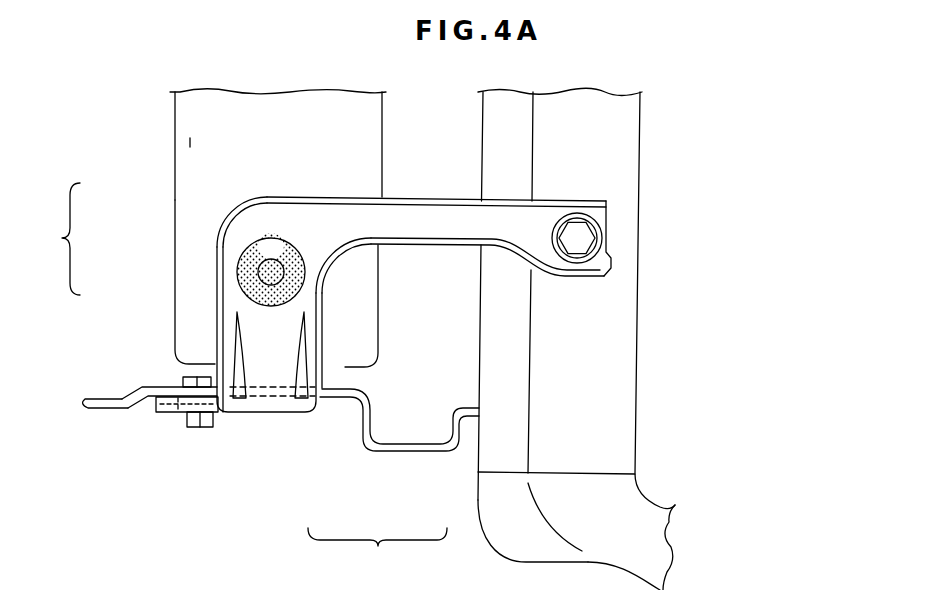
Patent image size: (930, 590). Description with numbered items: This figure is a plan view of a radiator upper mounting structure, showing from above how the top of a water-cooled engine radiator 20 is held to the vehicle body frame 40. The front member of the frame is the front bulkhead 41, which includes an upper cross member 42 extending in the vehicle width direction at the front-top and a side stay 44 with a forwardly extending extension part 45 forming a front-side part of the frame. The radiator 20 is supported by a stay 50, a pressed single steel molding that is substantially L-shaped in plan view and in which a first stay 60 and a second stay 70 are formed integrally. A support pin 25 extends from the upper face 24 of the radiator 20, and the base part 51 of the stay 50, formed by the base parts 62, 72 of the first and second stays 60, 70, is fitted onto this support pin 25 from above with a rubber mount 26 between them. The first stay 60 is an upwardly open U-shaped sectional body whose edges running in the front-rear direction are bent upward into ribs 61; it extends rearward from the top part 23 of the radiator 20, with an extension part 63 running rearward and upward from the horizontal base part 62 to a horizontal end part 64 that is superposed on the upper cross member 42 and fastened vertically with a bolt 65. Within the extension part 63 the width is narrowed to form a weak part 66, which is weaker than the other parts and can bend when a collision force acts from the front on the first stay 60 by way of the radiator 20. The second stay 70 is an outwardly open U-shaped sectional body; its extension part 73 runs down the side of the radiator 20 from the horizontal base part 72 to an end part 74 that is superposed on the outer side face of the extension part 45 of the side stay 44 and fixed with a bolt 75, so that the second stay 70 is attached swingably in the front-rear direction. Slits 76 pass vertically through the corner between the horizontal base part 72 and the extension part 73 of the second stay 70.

The radiator 20 is at (215, 220).
The top part of the radiator 23 is at (198, 176).
The upper face of the radiator 24 is at (190, 143).
The support pin 25 is at (271, 262).
The rubber mount 26 is at (290, 246).
The vehicle body frame 40 is at (690, 548).
The front bulkhead 41 is at (630, 339).
The upper cross member 42 is at (620, 425).
The side stay 44 is at (100, 408).
The extension part of the side stay 45 is at (125, 464).
The stay 50 is at (393, 409).
The base part of the stay 51 is at (197, 233).
The first stay 60 is at (400, 246).
The rib 61 is at (497, 323).
The horizontal base part of the first stay 62 is at (245, 232).
The extension part of the first stay 63 is at (342, 197).
The end part of the first stay 64 is at (599, 216).
The bolt 65 is at (580, 238).
The weak part 66 is at (429, 216).
The second stay 70 is at (332, 355).
The horizontal base part of the second stay 72 is at (225, 226).
The extension part of the second stay 73 is at (267, 373).
The end part of the second stay 74 is at (177, 407).
The bolt 75 is at (200, 428).
The slit 76 is at (300, 352).